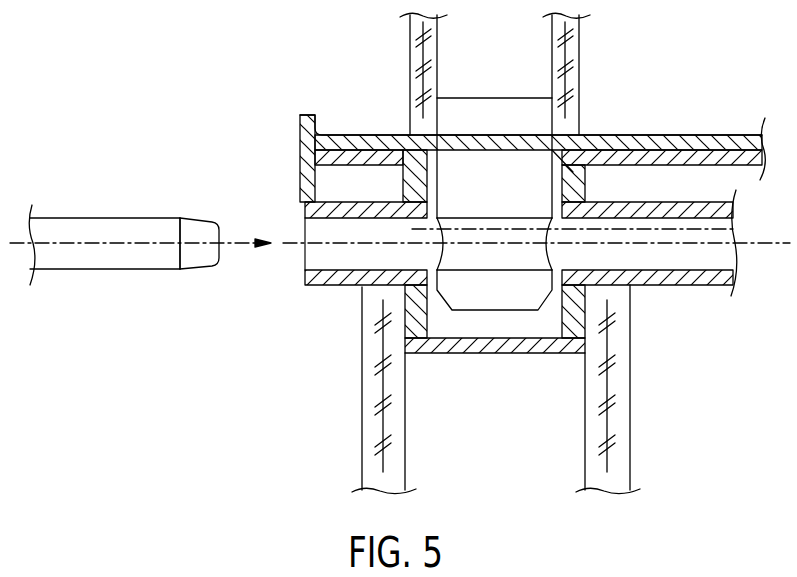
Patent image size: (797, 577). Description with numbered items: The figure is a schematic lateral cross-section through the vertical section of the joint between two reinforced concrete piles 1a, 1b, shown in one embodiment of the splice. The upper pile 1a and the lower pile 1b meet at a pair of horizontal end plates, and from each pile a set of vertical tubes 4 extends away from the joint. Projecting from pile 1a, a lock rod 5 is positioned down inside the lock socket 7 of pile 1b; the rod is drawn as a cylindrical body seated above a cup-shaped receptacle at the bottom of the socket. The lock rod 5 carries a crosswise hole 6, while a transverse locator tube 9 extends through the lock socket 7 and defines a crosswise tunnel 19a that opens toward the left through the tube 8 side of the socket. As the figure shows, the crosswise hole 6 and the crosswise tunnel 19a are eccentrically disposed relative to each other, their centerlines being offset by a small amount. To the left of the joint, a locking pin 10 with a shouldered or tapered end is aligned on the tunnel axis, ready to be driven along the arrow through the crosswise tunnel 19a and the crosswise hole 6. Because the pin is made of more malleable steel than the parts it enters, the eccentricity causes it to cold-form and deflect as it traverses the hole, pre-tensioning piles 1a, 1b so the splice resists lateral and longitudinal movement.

The reinforced concrete pile 1a is at (676, 56).
The reinforced concrete pile 1b is at (687, 395).
The vertical tubes 4 is at (410, 52).
The lock rod 5 is at (483, 300).
The crosswise hole 6 is at (535, 259).
The lock socket 7 is at (540, 353).
The left tube 8 is at (332, 288).
The transverse locator tube 9 is at (682, 287).
The locking pin 10 is at (107, 203).
The crosswise tunnel 19a is at (298, 258).